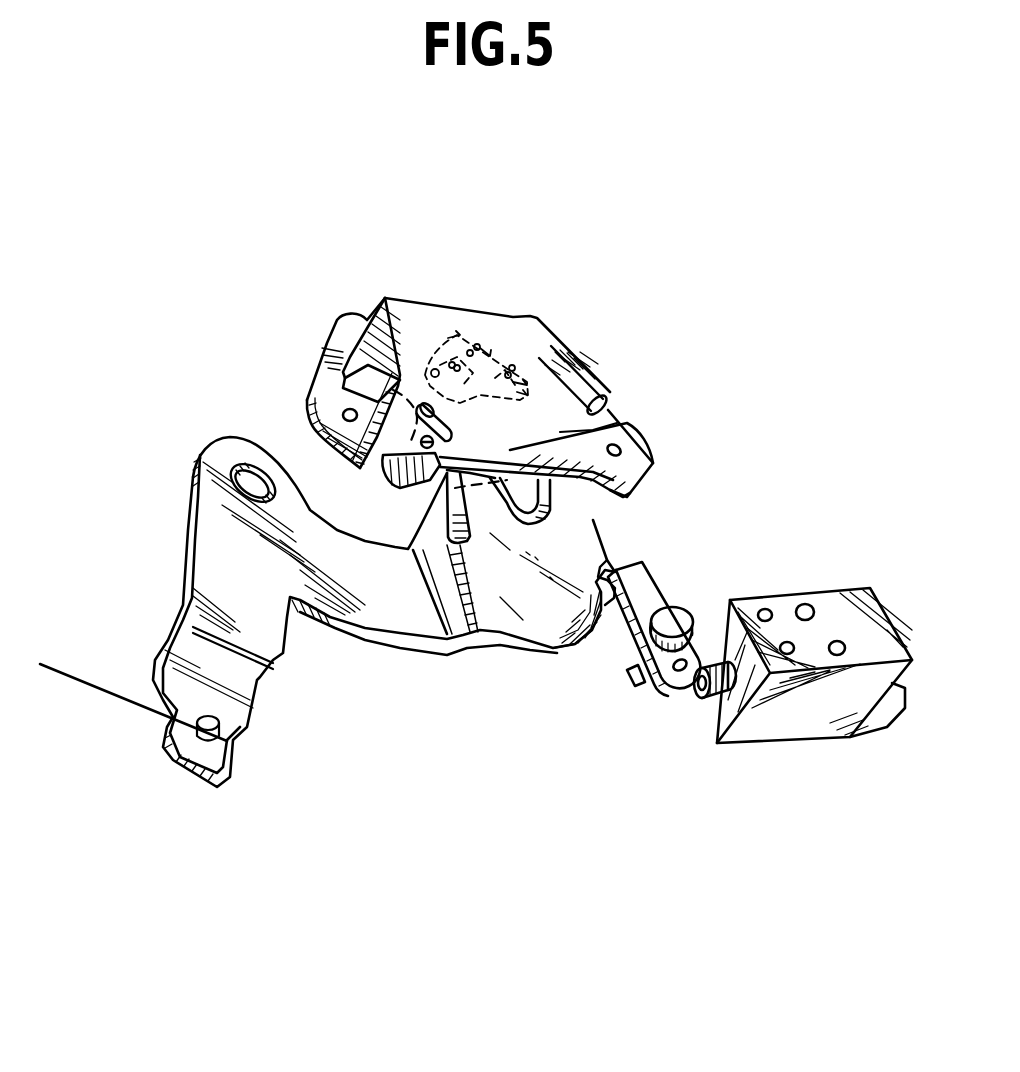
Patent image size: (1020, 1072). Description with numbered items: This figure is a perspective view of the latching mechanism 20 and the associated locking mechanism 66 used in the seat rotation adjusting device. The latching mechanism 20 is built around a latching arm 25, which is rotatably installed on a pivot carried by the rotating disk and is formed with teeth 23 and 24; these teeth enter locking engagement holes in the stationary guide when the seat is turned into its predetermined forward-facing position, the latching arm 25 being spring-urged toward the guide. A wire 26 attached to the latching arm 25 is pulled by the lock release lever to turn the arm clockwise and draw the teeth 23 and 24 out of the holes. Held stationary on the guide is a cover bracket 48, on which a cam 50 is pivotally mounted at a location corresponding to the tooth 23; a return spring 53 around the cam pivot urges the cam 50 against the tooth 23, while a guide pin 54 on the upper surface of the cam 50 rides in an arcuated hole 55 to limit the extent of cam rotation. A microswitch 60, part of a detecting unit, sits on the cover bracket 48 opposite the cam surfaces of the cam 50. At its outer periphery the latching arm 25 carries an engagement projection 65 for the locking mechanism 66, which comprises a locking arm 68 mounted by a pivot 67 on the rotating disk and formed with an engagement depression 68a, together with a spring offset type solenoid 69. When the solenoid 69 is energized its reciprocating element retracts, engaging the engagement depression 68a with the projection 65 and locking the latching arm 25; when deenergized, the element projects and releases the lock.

The latching mechanism 20 is at (423, 663).
The tooth 23 is at (472, 507).
The tooth 24 is at (560, 493).
The latching arm 25 is at (213, 532).
The wire 26 is at (97, 688).
The cover bracket 48 is at (570, 373).
The cam 50 is at (617, 423).
The return spring 53 is at (397, 473).
The guide pin 54 is at (470, 386).
The arcuated hole 55 is at (425, 402).
The microswitch 60 is at (502, 345).
The engagement projection 65 is at (610, 577).
The locking mechanism 66 is at (700, 745).
The pivot 67 is at (675, 623).
The locking arm 68 is at (627, 643).
The engagement depression 68a is at (615, 550).
The solenoid 69 is at (820, 722).